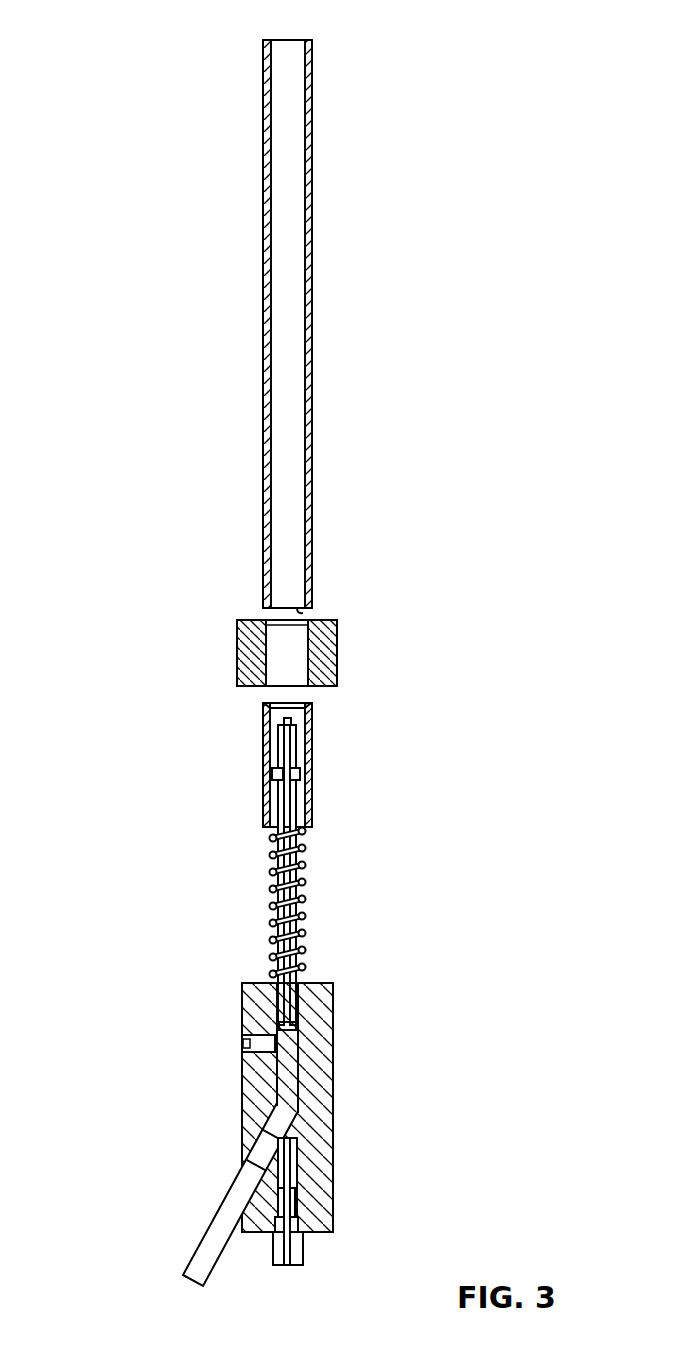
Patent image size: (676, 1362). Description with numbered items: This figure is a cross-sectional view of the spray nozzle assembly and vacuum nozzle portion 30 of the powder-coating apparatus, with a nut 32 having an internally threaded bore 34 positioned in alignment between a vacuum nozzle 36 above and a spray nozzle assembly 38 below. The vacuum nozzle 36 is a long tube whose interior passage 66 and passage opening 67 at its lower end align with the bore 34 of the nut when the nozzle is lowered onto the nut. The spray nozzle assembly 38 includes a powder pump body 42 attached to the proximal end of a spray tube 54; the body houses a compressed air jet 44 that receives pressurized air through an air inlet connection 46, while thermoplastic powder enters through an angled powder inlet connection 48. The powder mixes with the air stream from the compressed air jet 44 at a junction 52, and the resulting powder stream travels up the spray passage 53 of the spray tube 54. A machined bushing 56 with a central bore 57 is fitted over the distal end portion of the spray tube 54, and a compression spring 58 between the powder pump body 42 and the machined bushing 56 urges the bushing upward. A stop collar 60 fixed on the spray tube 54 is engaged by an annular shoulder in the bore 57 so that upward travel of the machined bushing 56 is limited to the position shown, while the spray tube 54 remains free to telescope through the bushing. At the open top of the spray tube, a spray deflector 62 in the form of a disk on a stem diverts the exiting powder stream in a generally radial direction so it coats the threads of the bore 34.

The spray nozzle assembly and vacuum nozzle portion 30 is at (130, 30).
The nut 32 is at (337, 655).
The internally threaded bore 34 is at (278, 650).
The vacuum nozzle 36 is at (313, 295).
The spray nozzle assembly 38 is at (371, 877).
The powder pump body 42 is at (242, 982).
The compressed air jet 44 is at (293, 1150).
The air inlet connection 46 is at (303, 1255).
The powder inlet connection 48 is at (182, 1273).
The junction 52 is at (277, 1095).
The spray passage 53 is at (290, 1005).
The spray tube 54 is at (301, 1013).
The machined bushing 56 is at (314, 796).
The central bore 57 is at (305, 762).
The compression spring 58 is at (306, 926).
The stop collar 60 is at (275, 773).
The spray deflector 62 is at (294, 722).
The interior passage 66 is at (283, 255).
The passage opening 67 is at (300, 612).